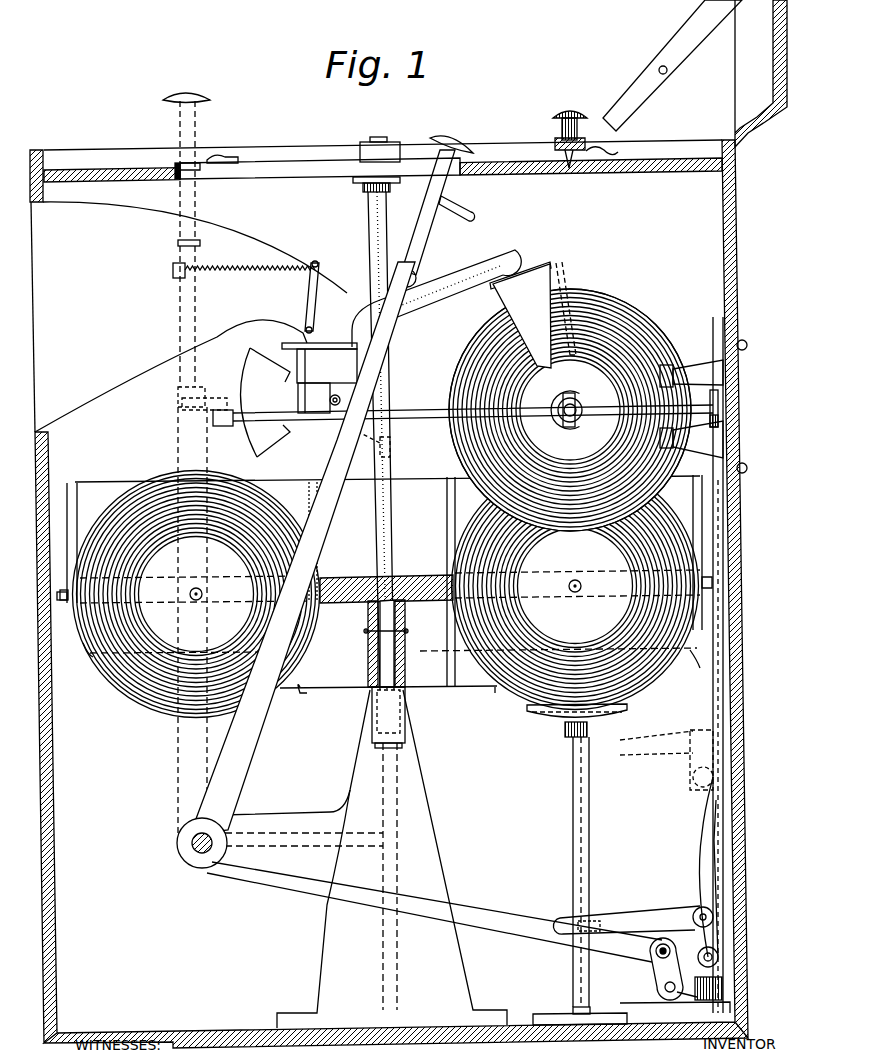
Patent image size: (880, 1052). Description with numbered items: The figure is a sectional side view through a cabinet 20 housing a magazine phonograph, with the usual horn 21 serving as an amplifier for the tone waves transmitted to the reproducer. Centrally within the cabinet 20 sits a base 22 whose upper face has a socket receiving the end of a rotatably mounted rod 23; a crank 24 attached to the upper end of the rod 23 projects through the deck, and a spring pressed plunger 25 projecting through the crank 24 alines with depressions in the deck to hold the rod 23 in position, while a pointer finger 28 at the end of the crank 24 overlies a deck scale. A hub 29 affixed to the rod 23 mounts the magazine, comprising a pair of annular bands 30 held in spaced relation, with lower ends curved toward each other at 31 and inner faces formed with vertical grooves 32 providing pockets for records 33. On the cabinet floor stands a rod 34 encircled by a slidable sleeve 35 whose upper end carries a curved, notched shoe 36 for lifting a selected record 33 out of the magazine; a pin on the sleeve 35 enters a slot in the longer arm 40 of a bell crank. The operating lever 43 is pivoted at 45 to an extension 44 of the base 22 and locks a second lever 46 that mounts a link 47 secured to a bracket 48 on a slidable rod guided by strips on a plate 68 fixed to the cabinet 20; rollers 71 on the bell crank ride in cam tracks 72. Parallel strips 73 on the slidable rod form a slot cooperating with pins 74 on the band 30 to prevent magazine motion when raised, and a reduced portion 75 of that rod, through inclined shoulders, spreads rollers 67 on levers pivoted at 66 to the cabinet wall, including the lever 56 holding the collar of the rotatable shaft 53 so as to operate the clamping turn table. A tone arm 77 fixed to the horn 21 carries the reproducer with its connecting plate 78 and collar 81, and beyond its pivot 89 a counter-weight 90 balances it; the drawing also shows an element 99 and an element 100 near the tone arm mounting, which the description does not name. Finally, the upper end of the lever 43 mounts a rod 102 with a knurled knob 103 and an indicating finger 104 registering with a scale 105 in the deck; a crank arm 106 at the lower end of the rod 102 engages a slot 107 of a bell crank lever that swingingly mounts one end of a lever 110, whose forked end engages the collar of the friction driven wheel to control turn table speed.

The cabinet 20 is at (736, 520).
The horn 21 is at (191, 317).
The base 22 is at (333, 975).
The rod 23 is at (403, 686).
The crank 24 is at (495, 148).
The spring pressed plunger 25 is at (582, 113).
The pointer finger 28 is at (612, 150).
The hub 29 is at (410, 576).
The annular band 30 is at (76, 512).
The curved lower end 31 is at (86, 655).
The groove 32 is at (80, 482).
The record 33 is at (634, 318).
The rod 34 is at (572, 1012).
The sleeve 35 is at (585, 862).
The shoe 36 is at (630, 711).
The longer arm of bell crank 40 is at (640, 915).
The operating lever 43 is at (176, 431).
The extension 44 is at (310, 807).
The pivot 45 is at (178, 846).
The second lever 46 is at (457, 893).
The link 47 is at (656, 968).
The bracket 48 is at (680, 997).
The rotatable shaft 53 is at (580, 407).
The lever 56 is at (588, 416).
The pivot 66 is at (731, 372).
The roller 67 is at (728, 408).
The plate 68 is at (724, 238).
The roller 71 is at (718, 948).
The cam track 72 is at (719, 833).
The parallel strip 73 is at (714, 720).
The pin 74 is at (65, 602).
The reduced portion 75 is at (716, 330).
The tone arm 77 is at (478, 262).
The tone arm connecting plate 78 is at (550, 262).
The collar 81 is at (528, 300).
The pivot point 89 is at (342, 398).
The counter-weight 90 is at (265, 368).
The link 99 is at (320, 282).
The spring 100 is at (268, 265).
The rod 102 is at (418, 250).
The knurled knob 103 is at (212, 98).
The indicating finger 104 is at (472, 216).
The scale 105 is at (236, 158).
The crank arm 106 is at (210, 400).
The slot 107 is at (222, 426).
The lever 110 is at (414, 412).